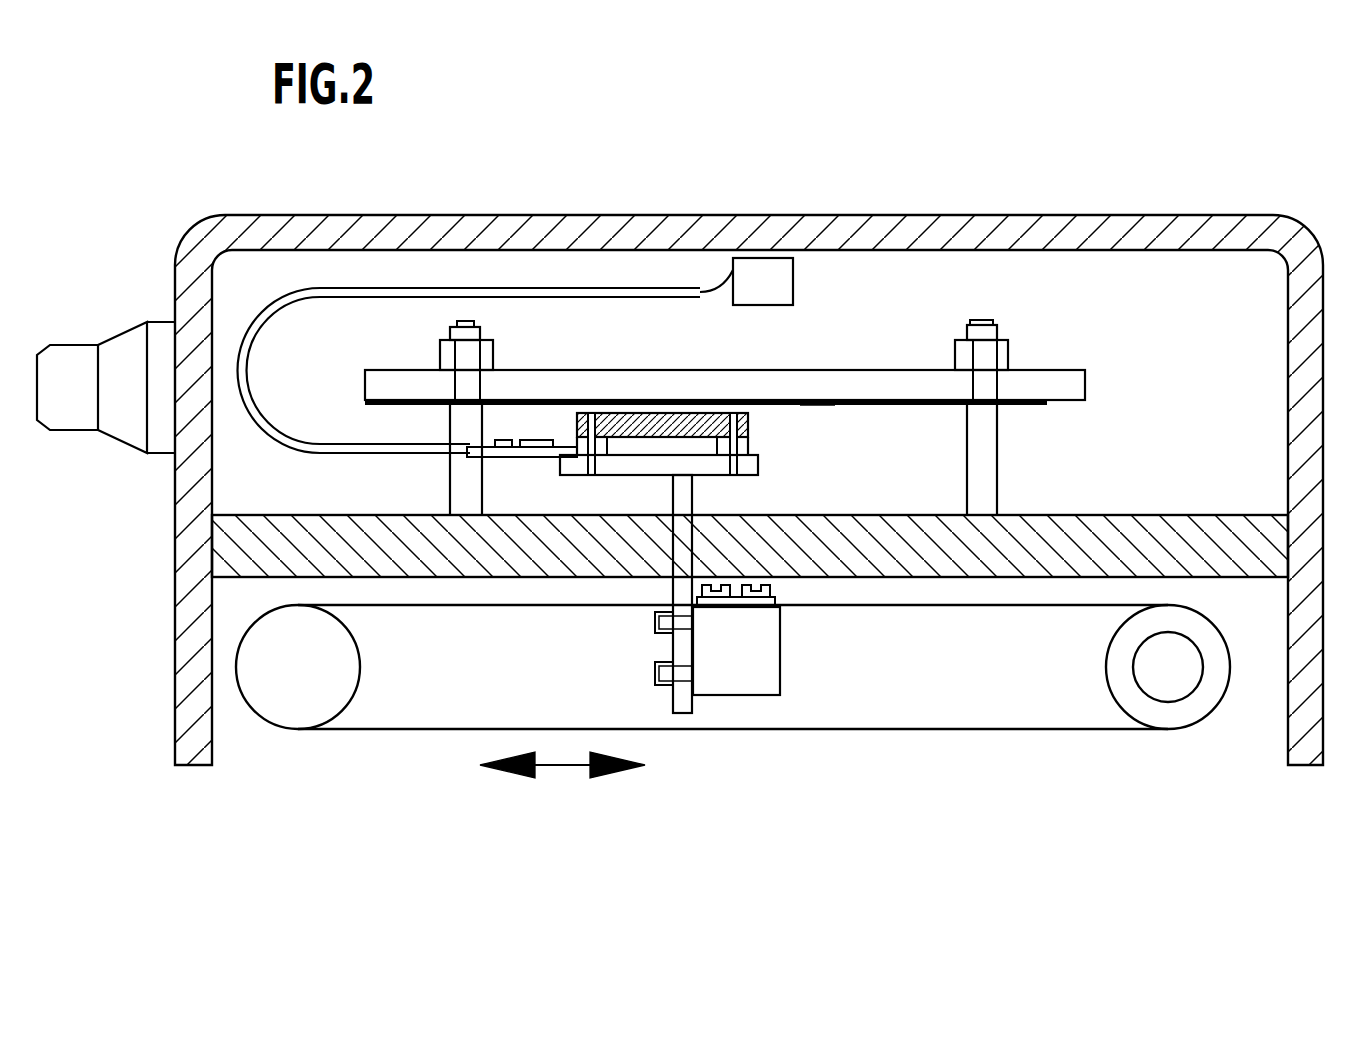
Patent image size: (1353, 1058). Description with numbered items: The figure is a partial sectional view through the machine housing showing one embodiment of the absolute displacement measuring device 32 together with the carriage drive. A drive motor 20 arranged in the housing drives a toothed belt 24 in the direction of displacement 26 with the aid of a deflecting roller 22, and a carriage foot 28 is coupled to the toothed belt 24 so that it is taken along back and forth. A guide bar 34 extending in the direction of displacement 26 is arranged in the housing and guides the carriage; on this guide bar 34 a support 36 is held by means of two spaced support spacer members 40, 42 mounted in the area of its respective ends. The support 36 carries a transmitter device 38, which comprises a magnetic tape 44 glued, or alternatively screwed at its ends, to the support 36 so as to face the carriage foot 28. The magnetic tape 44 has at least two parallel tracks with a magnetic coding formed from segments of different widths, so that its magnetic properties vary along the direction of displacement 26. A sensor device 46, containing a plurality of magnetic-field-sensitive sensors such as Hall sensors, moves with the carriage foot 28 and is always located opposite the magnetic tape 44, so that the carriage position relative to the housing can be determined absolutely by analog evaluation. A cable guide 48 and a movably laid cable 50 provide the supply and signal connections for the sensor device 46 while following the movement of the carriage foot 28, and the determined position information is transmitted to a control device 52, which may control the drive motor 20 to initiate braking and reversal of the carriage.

The drive motor 20 is at (307, 710).
The deflecting roller 22 is at (1180, 717).
The toothed belt 24 is at (755, 729).
The direction of displacement 26 is at (565, 772).
The carriage foot 28 is at (767, 662).
The displacement measuring device 32 is at (850, 333).
The guide bar 34 is at (1153, 530).
The support 36 is at (915, 387).
The transmitter device 38 is at (920, 406).
The support spacer member 40 is at (460, 485).
The support spacer member 42 is at (983, 448).
The magnetic tape 44 is at (815, 406).
The sensor device 46 is at (673, 418).
The cable guide 48 is at (518, 458).
The cable 50 is at (464, 290).
The control device 52 is at (758, 272).